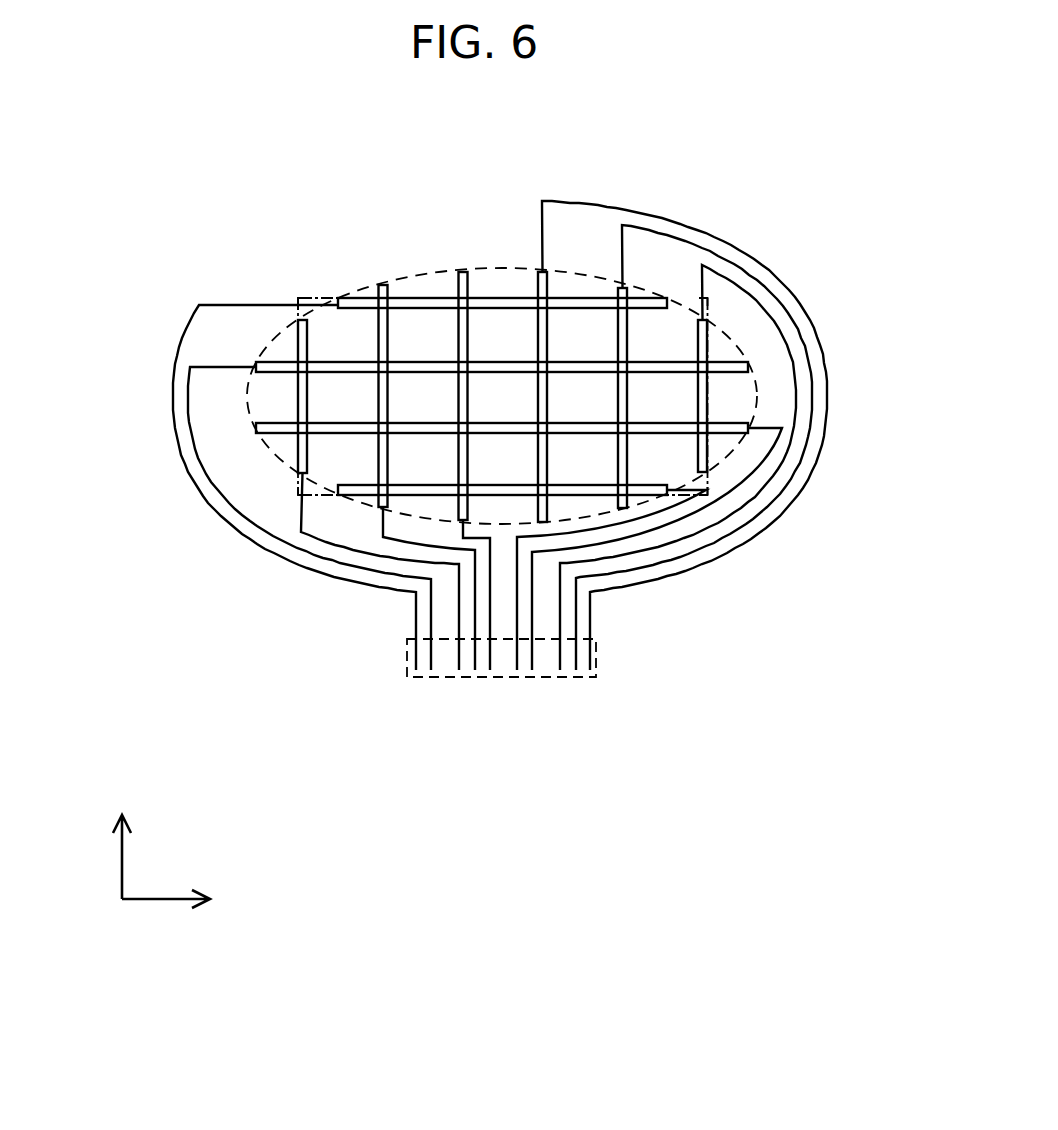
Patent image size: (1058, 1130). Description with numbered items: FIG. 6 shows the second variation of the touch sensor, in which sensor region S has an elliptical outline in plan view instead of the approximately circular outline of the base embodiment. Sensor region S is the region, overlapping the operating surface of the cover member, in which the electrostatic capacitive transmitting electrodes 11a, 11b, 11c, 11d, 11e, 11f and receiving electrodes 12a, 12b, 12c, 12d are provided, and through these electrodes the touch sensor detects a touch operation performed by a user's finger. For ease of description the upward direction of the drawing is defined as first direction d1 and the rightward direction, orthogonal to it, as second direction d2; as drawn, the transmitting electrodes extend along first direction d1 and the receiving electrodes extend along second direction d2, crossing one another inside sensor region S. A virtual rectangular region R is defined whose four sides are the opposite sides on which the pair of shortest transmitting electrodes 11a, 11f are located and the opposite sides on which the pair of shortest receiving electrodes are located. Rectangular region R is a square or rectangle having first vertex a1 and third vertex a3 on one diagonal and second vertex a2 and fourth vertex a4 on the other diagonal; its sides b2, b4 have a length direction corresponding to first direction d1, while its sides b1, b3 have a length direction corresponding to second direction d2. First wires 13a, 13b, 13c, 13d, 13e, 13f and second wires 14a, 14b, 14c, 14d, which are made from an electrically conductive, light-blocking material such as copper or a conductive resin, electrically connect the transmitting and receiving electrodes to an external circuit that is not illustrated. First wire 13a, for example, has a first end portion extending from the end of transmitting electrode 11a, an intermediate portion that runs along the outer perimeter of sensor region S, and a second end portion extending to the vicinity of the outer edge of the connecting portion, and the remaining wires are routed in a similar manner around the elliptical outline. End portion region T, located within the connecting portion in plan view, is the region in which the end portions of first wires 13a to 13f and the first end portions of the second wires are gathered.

The transmitting electrode 11a is at (299, 322).
The transmitting electrode 11b is at (387, 290).
The transmitting electrode 11c is at (468, 283).
The transmitting electrode 11d is at (549, 292).
The transmitting electrode 11e is at (630, 300).
The transmitting electrode 11f is at (707, 337).
The receiving electrode 12a is at (672, 488).
The receiving electrode 12b is at (258, 426).
The receiving electrode 12c is at (258, 360).
The receiving electrode 12d is at (672, 298).
The first wire 13a is at (352, 548).
The first wire 13b is at (405, 548).
The first wire 13c is at (488, 648).
The first wire 13d is at (797, 482).
The first wire 13e is at (812, 440).
The first wire 13f is at (828, 392).
The second wire 14a is at (633, 522).
The second wire 14b is at (603, 542).
The second wire 14c is at (188, 390).
The second wire 14d is at (237, 305).
The sensor region S is at (527, 267).
The rectangular region R is at (305, 296).
The end portion region T is at (598, 652).
The first vertex a1 is at (300, 495).
The second vertex a2 is at (735, 512).
The third vertex a3 is at (735, 295).
The fourth vertex a4 is at (300, 296).
The side b1 is at (310, 505).
The side b2 is at (720, 325).
The side b3 is at (328, 296).
The side b4 is at (295, 478).
The first direction d1 is at (122, 868).
The second direction d2 is at (157, 900).